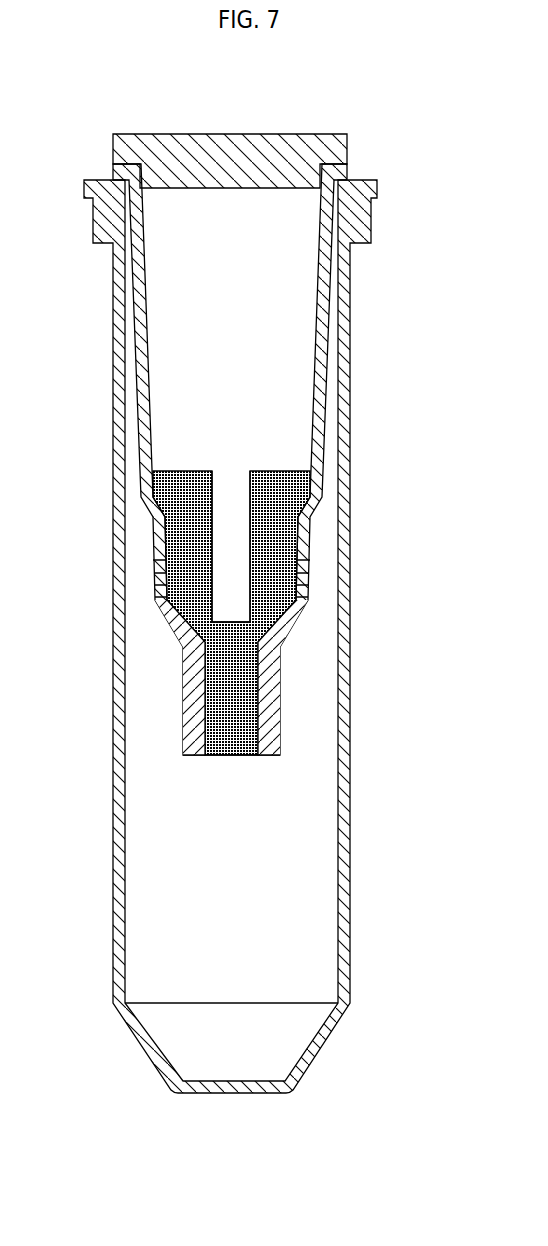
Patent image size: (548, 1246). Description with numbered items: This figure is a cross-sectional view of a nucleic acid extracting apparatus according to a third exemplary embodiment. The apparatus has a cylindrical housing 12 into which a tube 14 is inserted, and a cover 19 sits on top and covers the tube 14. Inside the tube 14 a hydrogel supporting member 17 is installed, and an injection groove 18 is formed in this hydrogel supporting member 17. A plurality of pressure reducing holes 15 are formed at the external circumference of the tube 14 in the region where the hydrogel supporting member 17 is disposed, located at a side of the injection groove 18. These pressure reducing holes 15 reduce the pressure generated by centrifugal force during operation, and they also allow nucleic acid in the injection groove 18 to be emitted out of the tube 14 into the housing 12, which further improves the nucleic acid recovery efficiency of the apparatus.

The cylindrical housing 12 is at (350, 637).
The tube 14 is at (308, 533).
The pressure reducing holes 15 is at (306, 567).
The hydrogel supporting member 17 is at (283, 469).
The injection groove 18 is at (212, 500).
The cover 19 is at (260, 153).